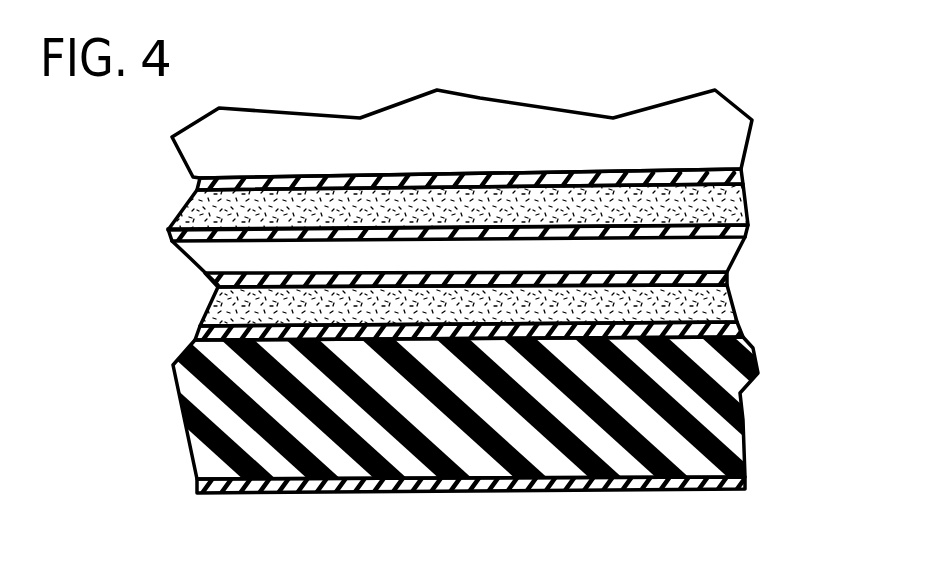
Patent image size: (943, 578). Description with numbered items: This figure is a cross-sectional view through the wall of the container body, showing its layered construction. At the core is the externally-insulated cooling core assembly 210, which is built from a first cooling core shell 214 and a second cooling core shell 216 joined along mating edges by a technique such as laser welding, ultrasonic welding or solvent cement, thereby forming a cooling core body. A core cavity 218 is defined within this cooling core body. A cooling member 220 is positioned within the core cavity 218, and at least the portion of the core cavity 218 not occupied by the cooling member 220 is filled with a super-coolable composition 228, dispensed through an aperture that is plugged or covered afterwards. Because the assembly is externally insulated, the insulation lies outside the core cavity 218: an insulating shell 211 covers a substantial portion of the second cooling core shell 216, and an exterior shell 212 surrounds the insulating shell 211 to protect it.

The first cooling core shell 214 is at (271, 130).
The super-coolable composition 228 is at (703, 168).
The cooling member 220 is at (208, 222).
The core cavity 218 is at (200, 305).
The second cooling core shell 216 is at (200, 337).
The cooling core assembly 210 is at (447, 239).
The insulating shell 211 is at (213, 402).
The exterior shell 212 is at (222, 494).